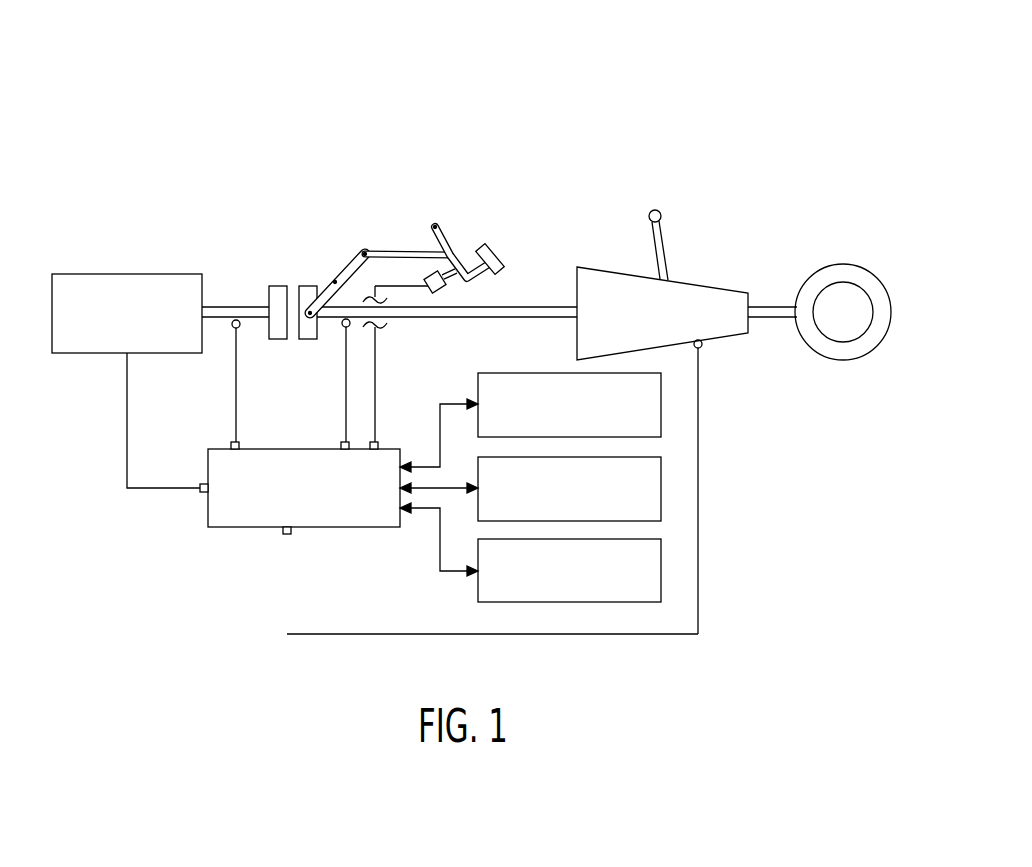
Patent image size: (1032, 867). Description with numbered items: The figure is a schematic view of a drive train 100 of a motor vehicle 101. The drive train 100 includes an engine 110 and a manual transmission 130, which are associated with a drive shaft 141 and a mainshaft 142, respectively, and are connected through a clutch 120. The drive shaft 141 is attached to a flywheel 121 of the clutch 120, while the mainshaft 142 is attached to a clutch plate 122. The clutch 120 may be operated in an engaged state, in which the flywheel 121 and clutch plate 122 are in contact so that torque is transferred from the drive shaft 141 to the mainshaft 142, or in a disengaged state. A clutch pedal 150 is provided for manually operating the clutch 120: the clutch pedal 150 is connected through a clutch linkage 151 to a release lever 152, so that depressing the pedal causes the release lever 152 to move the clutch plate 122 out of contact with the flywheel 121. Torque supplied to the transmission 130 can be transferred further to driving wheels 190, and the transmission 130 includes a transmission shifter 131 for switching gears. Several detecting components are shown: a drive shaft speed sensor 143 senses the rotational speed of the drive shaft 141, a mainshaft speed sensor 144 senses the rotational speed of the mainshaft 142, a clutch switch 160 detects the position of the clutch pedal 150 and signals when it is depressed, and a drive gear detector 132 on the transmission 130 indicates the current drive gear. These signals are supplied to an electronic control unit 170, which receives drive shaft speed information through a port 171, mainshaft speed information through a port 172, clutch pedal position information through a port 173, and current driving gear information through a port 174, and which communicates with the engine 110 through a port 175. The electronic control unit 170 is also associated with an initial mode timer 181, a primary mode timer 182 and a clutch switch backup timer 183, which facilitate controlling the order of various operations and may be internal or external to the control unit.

The drive train 100 is at (356, 122).
The motor vehicle 101 is at (551, 86).
The engine 110 is at (97, 274).
The clutch 120 is at (290, 257).
The flywheel 121 is at (274, 286).
The clutch plate 122 is at (304, 286).
The manual transmission 130 is at (703, 283).
The transmission shifter 131 is at (652, 210).
The drive gear detector 132 is at (703, 346).
The drive shaft 141 is at (223, 307).
The mainshaft 142 is at (535, 307).
The drive shaft speed sensor 143 is at (233, 327).
The mainshaft speed sensor 144 is at (343, 327).
The clutch pedal 150 is at (496, 247).
The clutch linkage 151 is at (412, 251).
The release lever 152 is at (337, 272).
The clutch switch 160 is at (440, 294).
The electronic control unit 170 is at (235, 527).
The port 171 is at (231, 442).
The port 172 is at (341, 442).
The port 173 is at (380, 444).
The port 174 is at (293, 533).
The port 175 is at (202, 492).
The initial mode timer 181 is at (661, 400).
The primary mode timer 182 is at (661, 492).
The clutch switch backup timer 183 is at (661, 570).
The driving wheels 190 is at (845, 265).